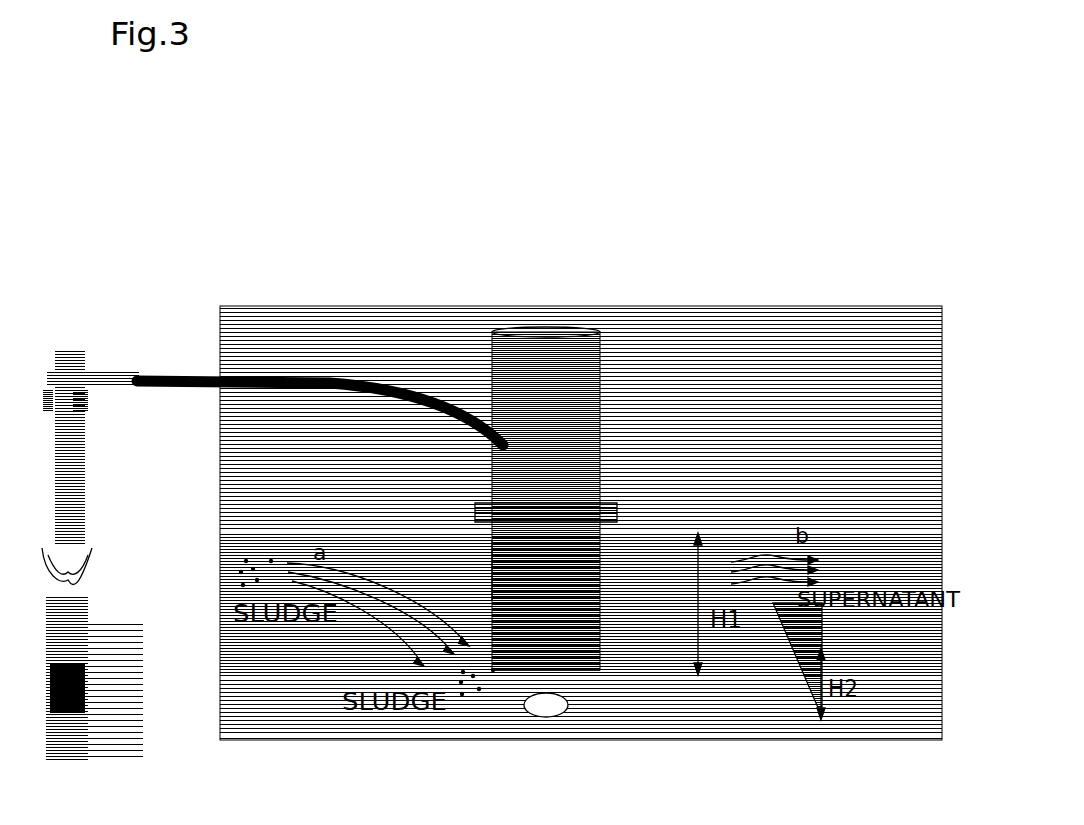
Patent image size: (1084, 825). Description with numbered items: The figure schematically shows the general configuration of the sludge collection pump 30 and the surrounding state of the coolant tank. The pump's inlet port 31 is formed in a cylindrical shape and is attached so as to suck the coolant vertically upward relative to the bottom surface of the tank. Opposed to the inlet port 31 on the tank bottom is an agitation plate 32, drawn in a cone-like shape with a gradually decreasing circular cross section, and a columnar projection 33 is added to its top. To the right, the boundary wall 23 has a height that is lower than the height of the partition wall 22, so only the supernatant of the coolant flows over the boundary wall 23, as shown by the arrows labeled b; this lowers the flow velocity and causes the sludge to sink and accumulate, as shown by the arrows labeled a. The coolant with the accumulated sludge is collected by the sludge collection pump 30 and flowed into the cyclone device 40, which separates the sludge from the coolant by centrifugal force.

The partition wall 22 is at (581, 523).
The boundary wall 23 is at (806, 637).
The sludge collection pump 30 is at (545, 323).
The inlet port 31 is at (505, 570).
The agitation plate 32 is at (543, 715).
The projection 33 is at (545, 687).
The cyclone device 40 is at (72, 352).